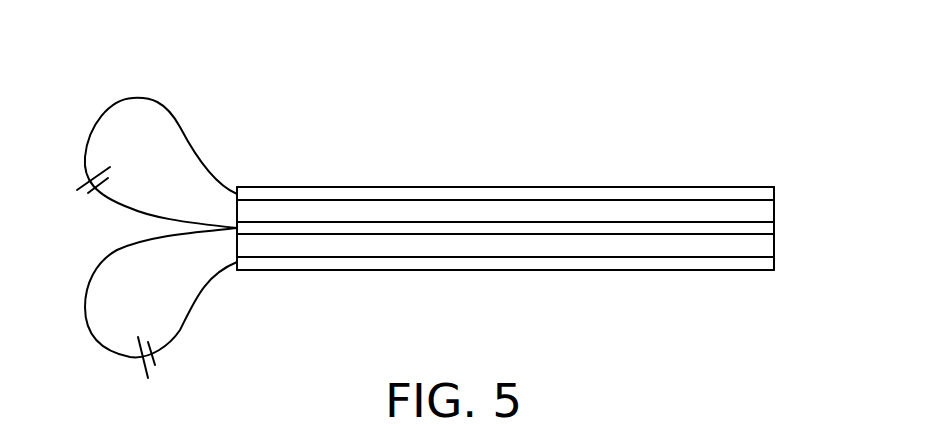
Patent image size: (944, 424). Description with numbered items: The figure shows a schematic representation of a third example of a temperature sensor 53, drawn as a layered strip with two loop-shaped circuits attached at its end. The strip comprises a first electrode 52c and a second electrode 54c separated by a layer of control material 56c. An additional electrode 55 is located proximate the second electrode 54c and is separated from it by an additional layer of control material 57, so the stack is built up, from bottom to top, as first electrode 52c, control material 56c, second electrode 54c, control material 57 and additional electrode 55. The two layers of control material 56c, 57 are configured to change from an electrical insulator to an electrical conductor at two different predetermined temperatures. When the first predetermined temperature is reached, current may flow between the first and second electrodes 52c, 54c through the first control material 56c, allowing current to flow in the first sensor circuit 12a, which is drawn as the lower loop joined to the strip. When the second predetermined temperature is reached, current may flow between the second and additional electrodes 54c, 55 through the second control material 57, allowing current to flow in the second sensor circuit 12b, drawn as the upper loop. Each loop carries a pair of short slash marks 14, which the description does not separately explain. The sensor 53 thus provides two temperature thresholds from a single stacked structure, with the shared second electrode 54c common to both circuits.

The first sensor circuit 12a is at (102, 348).
The second sensor circuit 12b is at (102, 110).
The seam / slash marks 14 is at (85, 186).
The temperature sensor 53 is at (540, 212).
The additional electrode 55 is at (748, 192).
The additional layer of control material 57 is at (768, 212).
The second electrode 54c is at (768, 227).
The control material 56c is at (768, 245).
The first electrode 52c is at (748, 264).